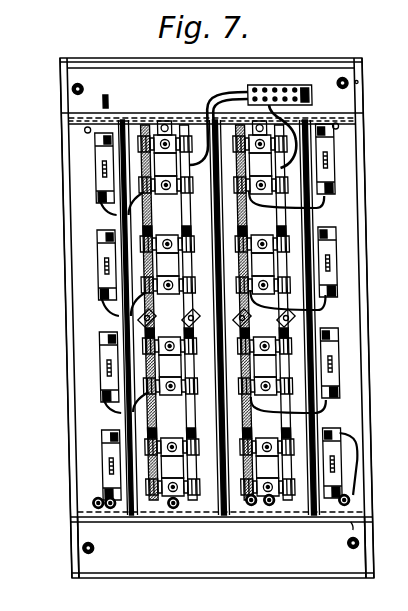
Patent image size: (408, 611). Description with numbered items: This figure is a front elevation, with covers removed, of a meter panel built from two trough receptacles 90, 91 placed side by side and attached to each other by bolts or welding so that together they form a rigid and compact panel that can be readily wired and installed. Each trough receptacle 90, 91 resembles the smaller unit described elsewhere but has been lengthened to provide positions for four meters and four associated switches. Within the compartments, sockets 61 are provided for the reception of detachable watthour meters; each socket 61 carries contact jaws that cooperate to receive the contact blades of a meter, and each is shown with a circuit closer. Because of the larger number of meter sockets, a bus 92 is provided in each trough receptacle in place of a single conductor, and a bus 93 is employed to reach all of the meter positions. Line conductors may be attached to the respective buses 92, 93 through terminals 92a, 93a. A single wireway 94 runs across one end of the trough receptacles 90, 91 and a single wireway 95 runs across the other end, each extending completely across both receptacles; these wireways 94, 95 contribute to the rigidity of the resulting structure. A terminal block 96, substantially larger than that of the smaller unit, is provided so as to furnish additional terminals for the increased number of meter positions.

The trough receptacle 90 is at (67, 331).
The trough receptacle 91 is at (357, 341).
The wireway 94 is at (105, 58).
The wireway 95 is at (64, 572).
The terminal block 96 is at (276, 85).
The socket 61 is at (169, 170).
The bus 92 is at (152, 225).
The bus 93 is at (185, 226).
The terminal 92a is at (116, 320).
The terminal 93a is at (204, 317).